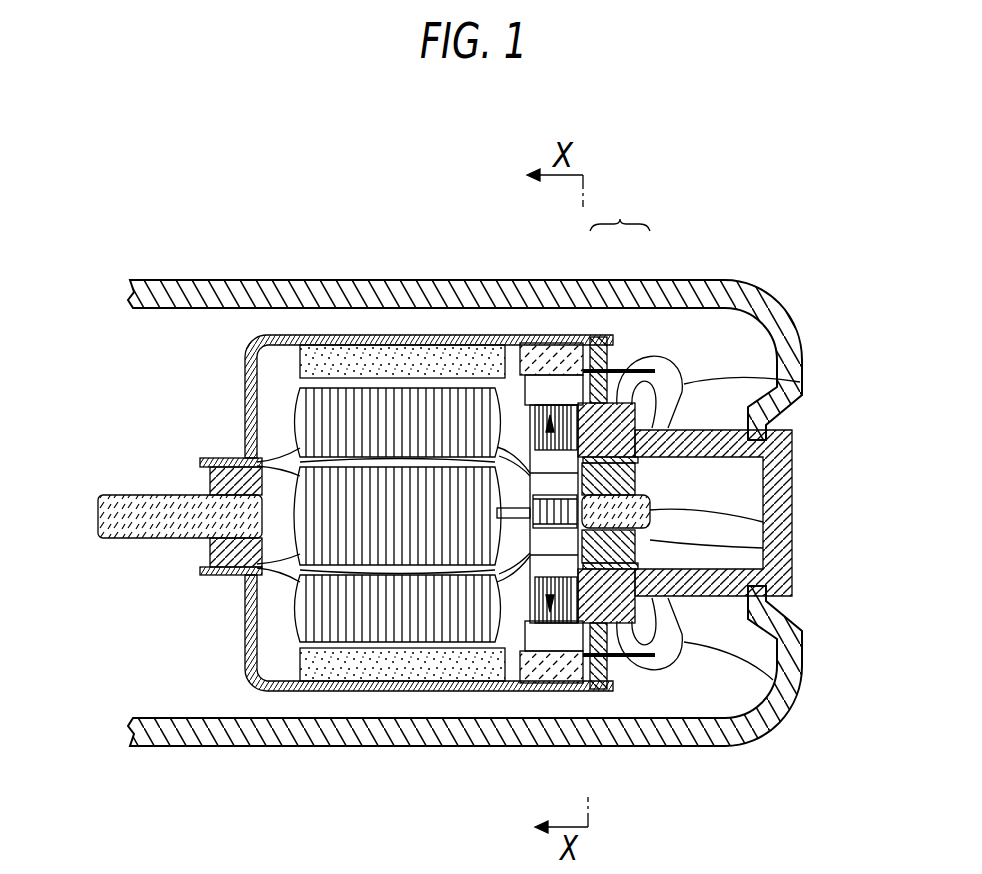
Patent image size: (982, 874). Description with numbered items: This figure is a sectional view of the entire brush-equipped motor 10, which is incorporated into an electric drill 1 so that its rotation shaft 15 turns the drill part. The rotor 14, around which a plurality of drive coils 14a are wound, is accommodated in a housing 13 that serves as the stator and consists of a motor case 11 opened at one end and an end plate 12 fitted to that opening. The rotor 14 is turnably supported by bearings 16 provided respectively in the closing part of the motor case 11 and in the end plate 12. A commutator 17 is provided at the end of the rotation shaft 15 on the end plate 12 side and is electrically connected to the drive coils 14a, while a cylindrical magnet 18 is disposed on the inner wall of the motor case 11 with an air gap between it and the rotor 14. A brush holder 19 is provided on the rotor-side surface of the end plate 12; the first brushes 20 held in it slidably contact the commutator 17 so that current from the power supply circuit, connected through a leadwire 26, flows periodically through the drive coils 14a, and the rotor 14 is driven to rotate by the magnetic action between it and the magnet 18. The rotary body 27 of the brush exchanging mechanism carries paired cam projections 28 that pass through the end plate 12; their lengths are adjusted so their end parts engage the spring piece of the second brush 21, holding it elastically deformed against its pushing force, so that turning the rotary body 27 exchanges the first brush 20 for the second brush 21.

The electric drill 1 is at (776, 318).
The motor 10 is at (240, 402).
The motor case 11 is at (593, 337).
The end plate 12 is at (612, 400).
The housing 13 is at (620, 211).
The rotor 14 is at (288, 603).
The drive coil 14a is at (290, 622).
The rotation shaft 15 is at (100, 521).
The bearing 16 is at (215, 548).
The commutator 17 is at (792, 521).
The magnet 18 is at (336, 345).
The brush holder 19 is at (513, 359).
The first brush 20 is at (543, 540).
The second brush 21 is at (638, 775).
The leadwire 26 is at (800, 382).
The rotary body 27 is at (792, 465).
The cam projection 28 is at (628, 372).